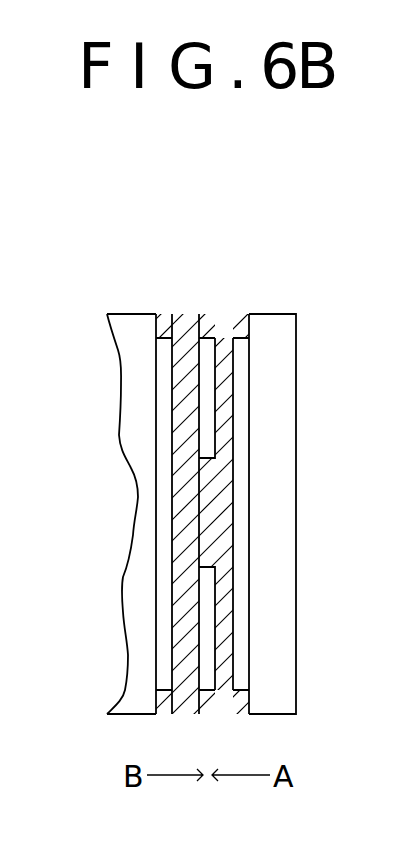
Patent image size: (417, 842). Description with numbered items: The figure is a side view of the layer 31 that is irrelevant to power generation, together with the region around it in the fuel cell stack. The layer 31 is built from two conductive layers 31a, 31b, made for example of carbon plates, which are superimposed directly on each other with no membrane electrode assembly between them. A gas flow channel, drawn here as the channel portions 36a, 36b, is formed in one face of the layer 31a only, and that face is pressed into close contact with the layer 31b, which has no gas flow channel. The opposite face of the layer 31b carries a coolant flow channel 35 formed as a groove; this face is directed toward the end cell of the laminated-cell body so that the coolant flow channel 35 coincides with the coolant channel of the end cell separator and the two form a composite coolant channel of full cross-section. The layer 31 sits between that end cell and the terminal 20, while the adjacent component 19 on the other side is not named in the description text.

The base body (left portion) 19 is at (140, 330).
The terminal 20 is at (273, 410).
The layer irrelevant to power generation 31 is at (208, 466).
The layer 31a is at (227, 330).
The layer 31b is at (180, 330).
The coolant flow channel 35 is at (243, 465).
The upper slit 36a is at (207, 370).
The lower slit 36b is at (207, 638).